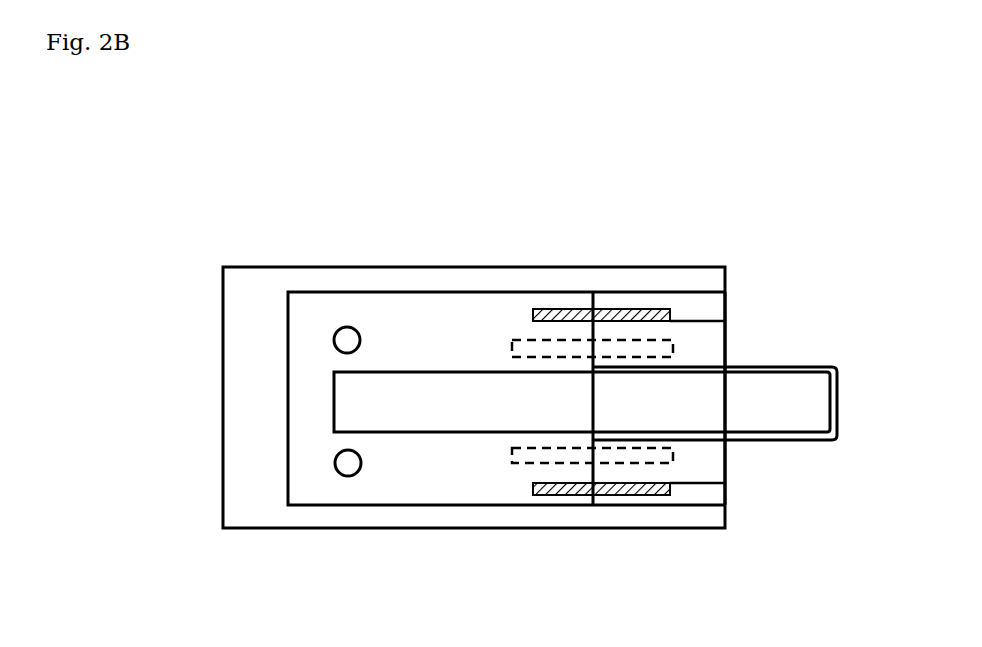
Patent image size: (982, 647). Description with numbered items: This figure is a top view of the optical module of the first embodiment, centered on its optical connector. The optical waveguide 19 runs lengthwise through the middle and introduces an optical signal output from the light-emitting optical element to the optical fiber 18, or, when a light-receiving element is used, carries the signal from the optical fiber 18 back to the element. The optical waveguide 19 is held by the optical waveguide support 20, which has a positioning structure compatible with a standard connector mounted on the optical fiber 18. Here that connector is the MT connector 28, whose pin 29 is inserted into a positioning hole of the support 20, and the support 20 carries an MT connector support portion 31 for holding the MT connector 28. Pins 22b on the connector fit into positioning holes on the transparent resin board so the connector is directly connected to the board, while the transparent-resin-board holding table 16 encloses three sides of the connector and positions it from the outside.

The transparent-resin-board holding table 16 is at (247, 287).
The optical fiber 18 is at (797, 386).
The optical waveguide 19 is at (430, 388).
The optical waveguide support 20 is at (333, 307).
The pin 22b is at (362, 340).
The MT connector 28 is at (718, 333).
The pin 29 is at (622, 457).
The MT connector support portion 31 is at (560, 309).